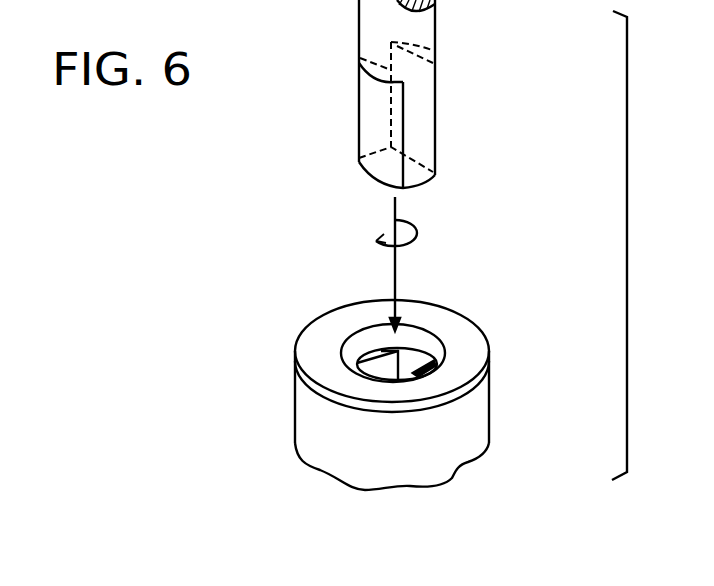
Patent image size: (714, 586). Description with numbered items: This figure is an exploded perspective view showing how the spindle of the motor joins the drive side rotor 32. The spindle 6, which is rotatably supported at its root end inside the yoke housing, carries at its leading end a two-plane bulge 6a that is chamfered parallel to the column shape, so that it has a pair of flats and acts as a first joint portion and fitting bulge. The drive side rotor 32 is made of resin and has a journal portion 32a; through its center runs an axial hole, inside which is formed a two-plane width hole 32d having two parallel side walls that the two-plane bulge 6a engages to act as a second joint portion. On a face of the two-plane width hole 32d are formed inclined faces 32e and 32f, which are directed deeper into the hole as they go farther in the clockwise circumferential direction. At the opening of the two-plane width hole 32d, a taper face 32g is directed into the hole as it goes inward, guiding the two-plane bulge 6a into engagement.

The spindle 6 is at (368, 32).
The two-plane bulge 6a is at (368, 117).
The drive side rotor 32 is at (490, 405).
The journal portion 32a is at (297, 410).
The two-plane width hole 32d is at (408, 358).
The inclined face 32e is at (430, 367).
The inclined face 32f is at (372, 345).
The taper face 32g is at (352, 348).